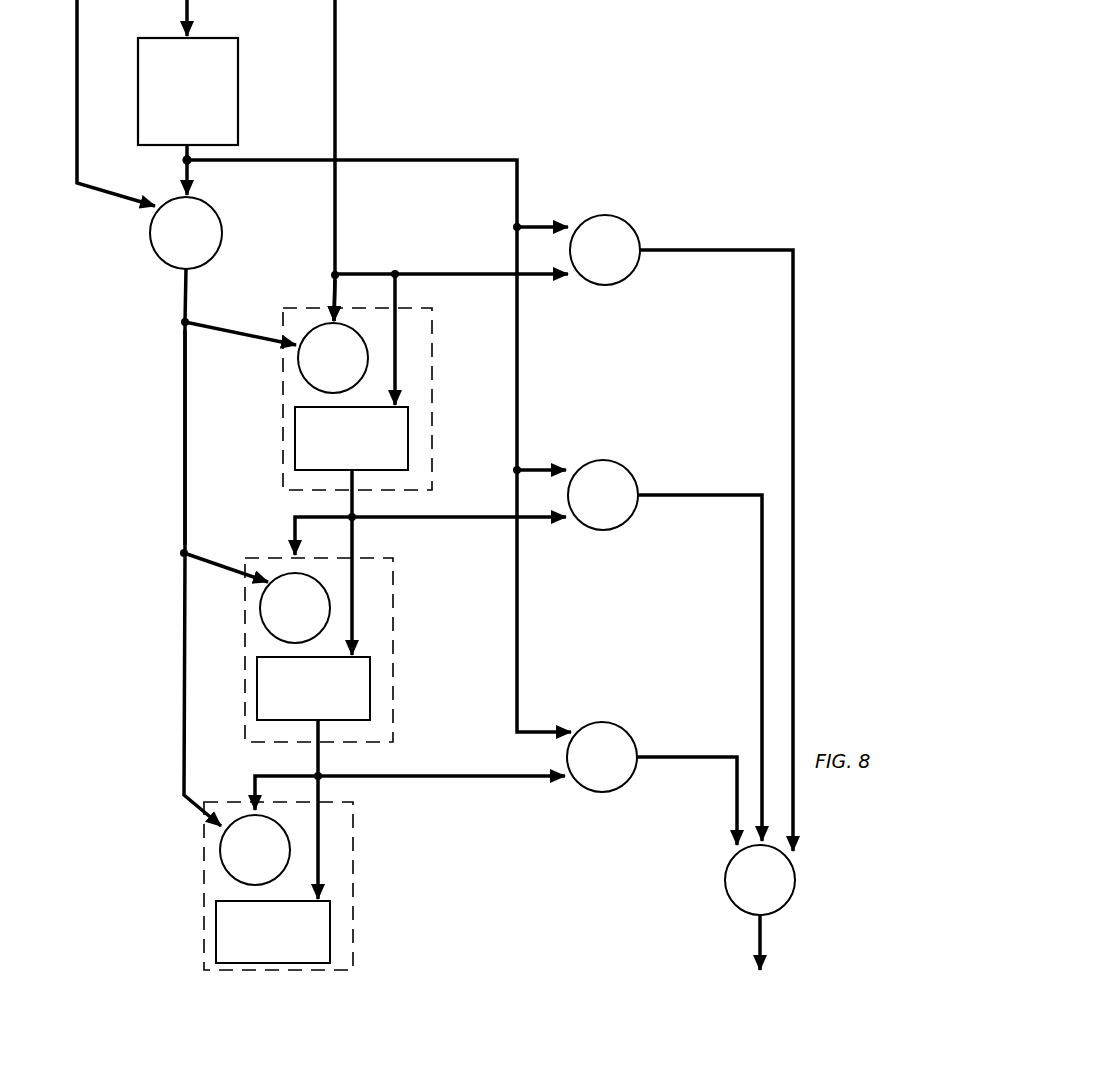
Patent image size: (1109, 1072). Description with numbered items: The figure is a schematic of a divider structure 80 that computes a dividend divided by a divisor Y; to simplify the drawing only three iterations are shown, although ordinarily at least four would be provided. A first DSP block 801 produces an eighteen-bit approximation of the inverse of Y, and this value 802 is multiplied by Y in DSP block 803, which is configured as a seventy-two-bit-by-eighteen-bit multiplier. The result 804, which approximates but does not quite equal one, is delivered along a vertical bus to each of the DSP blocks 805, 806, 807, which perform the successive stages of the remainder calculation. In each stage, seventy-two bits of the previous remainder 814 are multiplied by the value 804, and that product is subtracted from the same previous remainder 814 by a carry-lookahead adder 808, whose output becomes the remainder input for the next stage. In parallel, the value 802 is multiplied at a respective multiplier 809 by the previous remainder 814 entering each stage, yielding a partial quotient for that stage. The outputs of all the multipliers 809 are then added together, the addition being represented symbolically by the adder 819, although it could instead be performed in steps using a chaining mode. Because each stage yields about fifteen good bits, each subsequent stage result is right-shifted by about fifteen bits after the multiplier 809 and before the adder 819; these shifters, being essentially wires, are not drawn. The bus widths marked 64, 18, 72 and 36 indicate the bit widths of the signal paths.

The divider structure 80 is at (699, 143).
The input/output signal line 64 is at (65, 35).
The first DSP block 801 is at (208, 37).
The value 802 is at (180, 173).
The signal line 18 is at (277, 147).
The DSP block 803 is at (222, 240).
The product signal line 72 is at (197, 285).
The result 804 is at (185, 352).
The previous remainder 814 is at (330, 290).
The DSP block 805 is at (432, 375).
The DSP block 806 is at (393, 622).
The DSP block 807 is at (353, 900).
The carry-lookahead adder 808 is at (295, 440).
The multiplier 809 is at (610, 285).
The output signal line 36 is at (718, 238).
The adder 819 is at (795, 880).